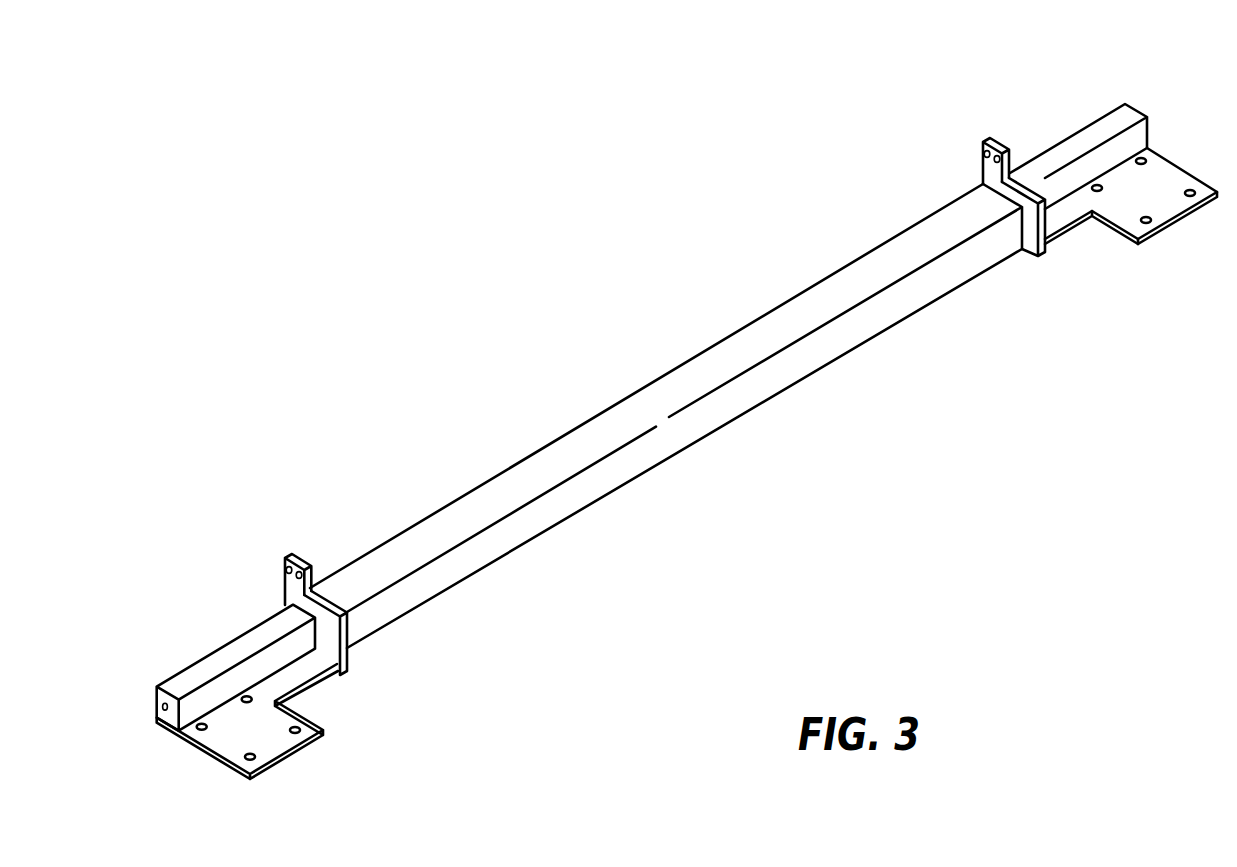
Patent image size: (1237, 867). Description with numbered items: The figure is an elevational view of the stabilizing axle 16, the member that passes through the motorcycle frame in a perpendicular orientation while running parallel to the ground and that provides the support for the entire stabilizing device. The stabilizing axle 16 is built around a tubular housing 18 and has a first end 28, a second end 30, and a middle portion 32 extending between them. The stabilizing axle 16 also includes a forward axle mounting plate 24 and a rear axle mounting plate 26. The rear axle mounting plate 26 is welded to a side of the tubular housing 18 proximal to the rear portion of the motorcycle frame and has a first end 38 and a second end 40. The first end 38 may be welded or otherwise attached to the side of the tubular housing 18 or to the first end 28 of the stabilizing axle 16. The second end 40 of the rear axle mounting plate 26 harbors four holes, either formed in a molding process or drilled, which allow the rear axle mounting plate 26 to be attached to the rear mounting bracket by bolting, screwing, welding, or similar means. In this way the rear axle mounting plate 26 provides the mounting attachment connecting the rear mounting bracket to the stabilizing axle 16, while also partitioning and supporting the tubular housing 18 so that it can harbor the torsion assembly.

The stabilizing axle 16 is at (666, 398).
The tubular housing 18 is at (1113, 176).
The forward axle mounting plate 24 is at (980, 164).
The rear axle mounting plate 26 is at (1131, 217).
The first end 28 is at (1112, 110).
The second end 30 is at (1008, 223).
The middle portion 32 is at (658, 378).
The first end 38 is at (1157, 183).
The second end 40 is at (1177, 227).